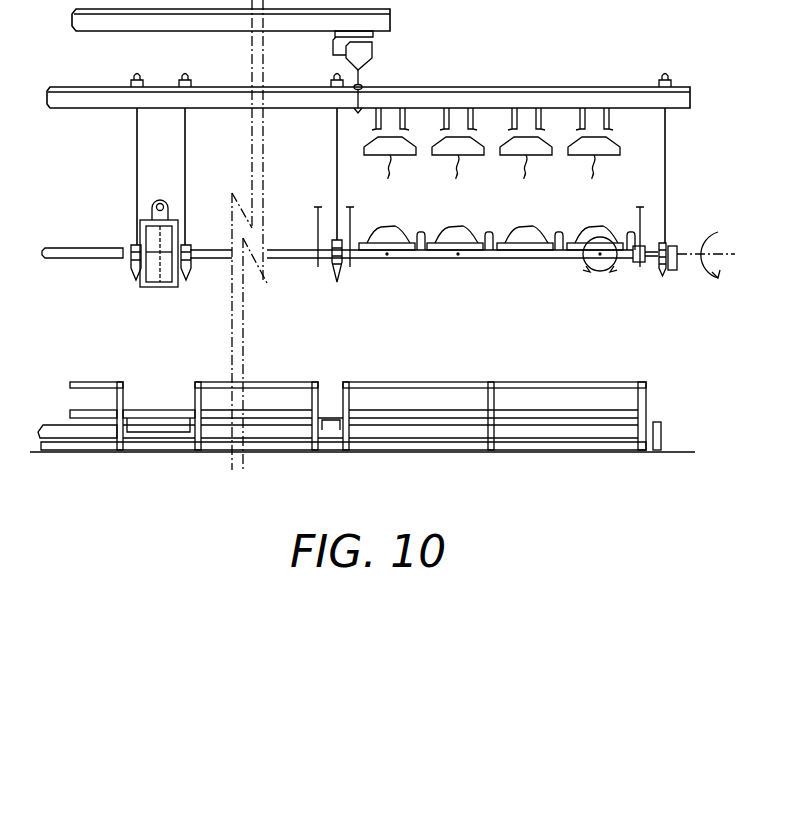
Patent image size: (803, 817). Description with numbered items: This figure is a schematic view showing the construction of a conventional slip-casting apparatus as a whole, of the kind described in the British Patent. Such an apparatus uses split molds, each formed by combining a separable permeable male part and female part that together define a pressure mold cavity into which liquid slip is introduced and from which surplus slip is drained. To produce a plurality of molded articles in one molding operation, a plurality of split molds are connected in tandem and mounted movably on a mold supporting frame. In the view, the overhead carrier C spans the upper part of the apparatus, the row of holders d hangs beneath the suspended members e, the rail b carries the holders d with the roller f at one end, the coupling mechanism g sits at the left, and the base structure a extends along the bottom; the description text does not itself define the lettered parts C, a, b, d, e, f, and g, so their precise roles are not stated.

The carrier beam C is at (490, 88).
The base structure a is at (646, 398).
The rail b is at (427, 262).
The workpiece holder d is at (404, 233).
The bell-shaped member e is at (492, 156).
The roller f is at (523, 230).
The coupling mechanism g is at (165, 288).